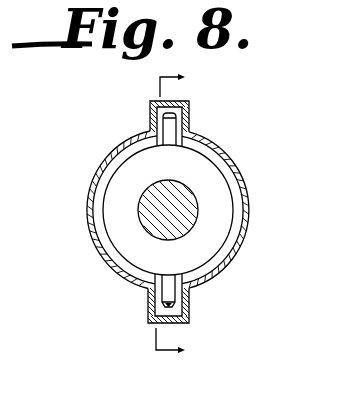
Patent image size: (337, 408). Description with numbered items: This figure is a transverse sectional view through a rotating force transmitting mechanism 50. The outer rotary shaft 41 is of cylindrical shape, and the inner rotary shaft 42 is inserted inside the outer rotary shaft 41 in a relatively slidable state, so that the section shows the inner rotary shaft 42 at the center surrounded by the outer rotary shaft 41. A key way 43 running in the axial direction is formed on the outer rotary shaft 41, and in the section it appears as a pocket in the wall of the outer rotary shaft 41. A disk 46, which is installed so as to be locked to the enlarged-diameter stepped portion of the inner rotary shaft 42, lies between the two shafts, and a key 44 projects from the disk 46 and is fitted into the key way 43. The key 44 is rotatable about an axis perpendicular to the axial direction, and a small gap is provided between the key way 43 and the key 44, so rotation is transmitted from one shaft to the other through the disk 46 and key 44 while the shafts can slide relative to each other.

The outer rotary shaft 41 is at (249, 234).
The inner rotary shaft 42 is at (196, 206).
The key way 43 is at (188, 117).
The key 44 is at (181, 131).
The disk 46 is at (200, 170).
The rotating force transmitting mechanism 50 is at (80, 209).